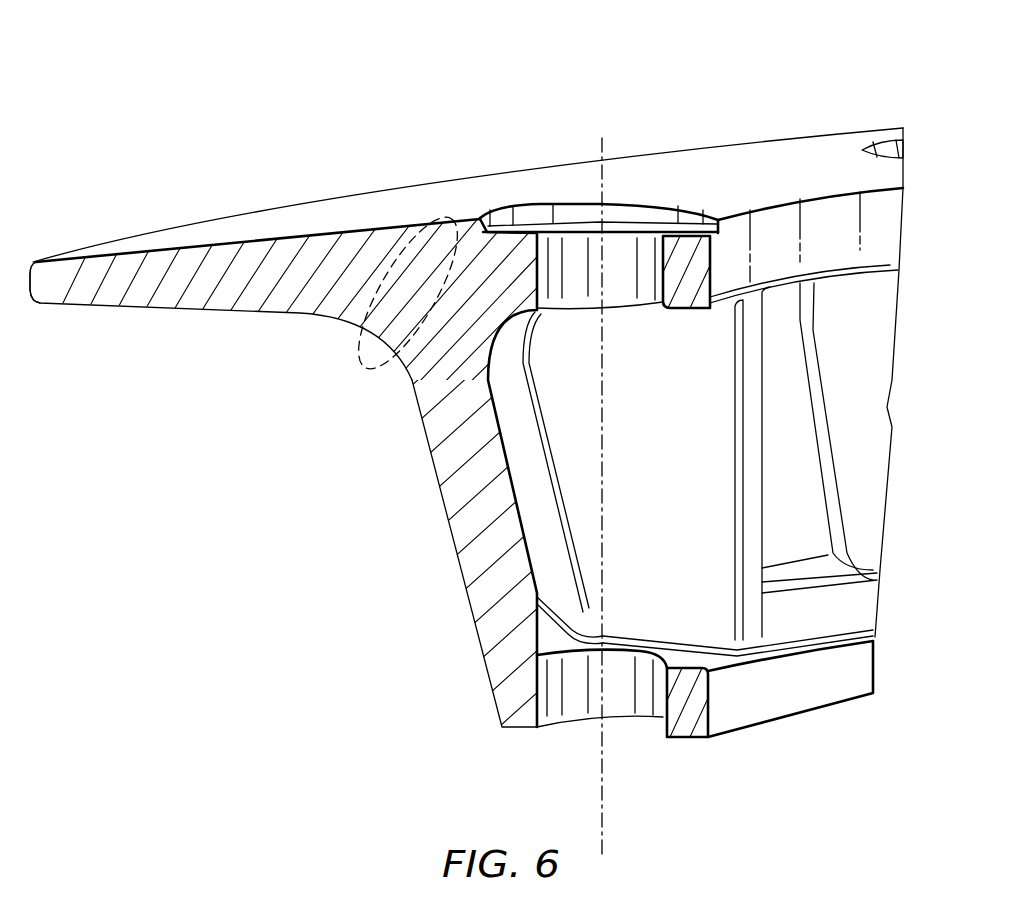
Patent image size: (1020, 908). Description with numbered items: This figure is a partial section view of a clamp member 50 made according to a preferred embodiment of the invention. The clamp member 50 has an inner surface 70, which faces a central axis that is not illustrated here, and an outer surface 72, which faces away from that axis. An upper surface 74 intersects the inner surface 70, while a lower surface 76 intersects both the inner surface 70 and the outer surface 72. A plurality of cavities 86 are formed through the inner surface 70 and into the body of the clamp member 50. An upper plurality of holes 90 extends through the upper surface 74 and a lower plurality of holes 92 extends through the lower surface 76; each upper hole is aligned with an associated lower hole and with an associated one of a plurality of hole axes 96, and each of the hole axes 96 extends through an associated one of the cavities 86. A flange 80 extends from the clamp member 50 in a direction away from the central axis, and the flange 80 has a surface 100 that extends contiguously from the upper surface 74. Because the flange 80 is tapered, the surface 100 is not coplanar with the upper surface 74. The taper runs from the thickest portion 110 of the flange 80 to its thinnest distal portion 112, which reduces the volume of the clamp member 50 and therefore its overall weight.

The clamp member 50 is at (462, 108).
The inner surface 70 is at (878, 230).
The outer surface 72 is at (447, 512).
The upper surface 74 is at (800, 158).
The lower surface 76 is at (680, 737).
The flange 80 is at (227, 293).
The cavities 86 is at (708, 592).
The upper plurality of holes 90 is at (620, 242).
The lower plurality of holes 92 is at (580, 693).
The hole axes 96 is at (603, 432).
The surface of the flange 100 is at (160, 240).
The thickest portion 110 is at (378, 370).
The thinnest distal portion 112 is at (22, 295).